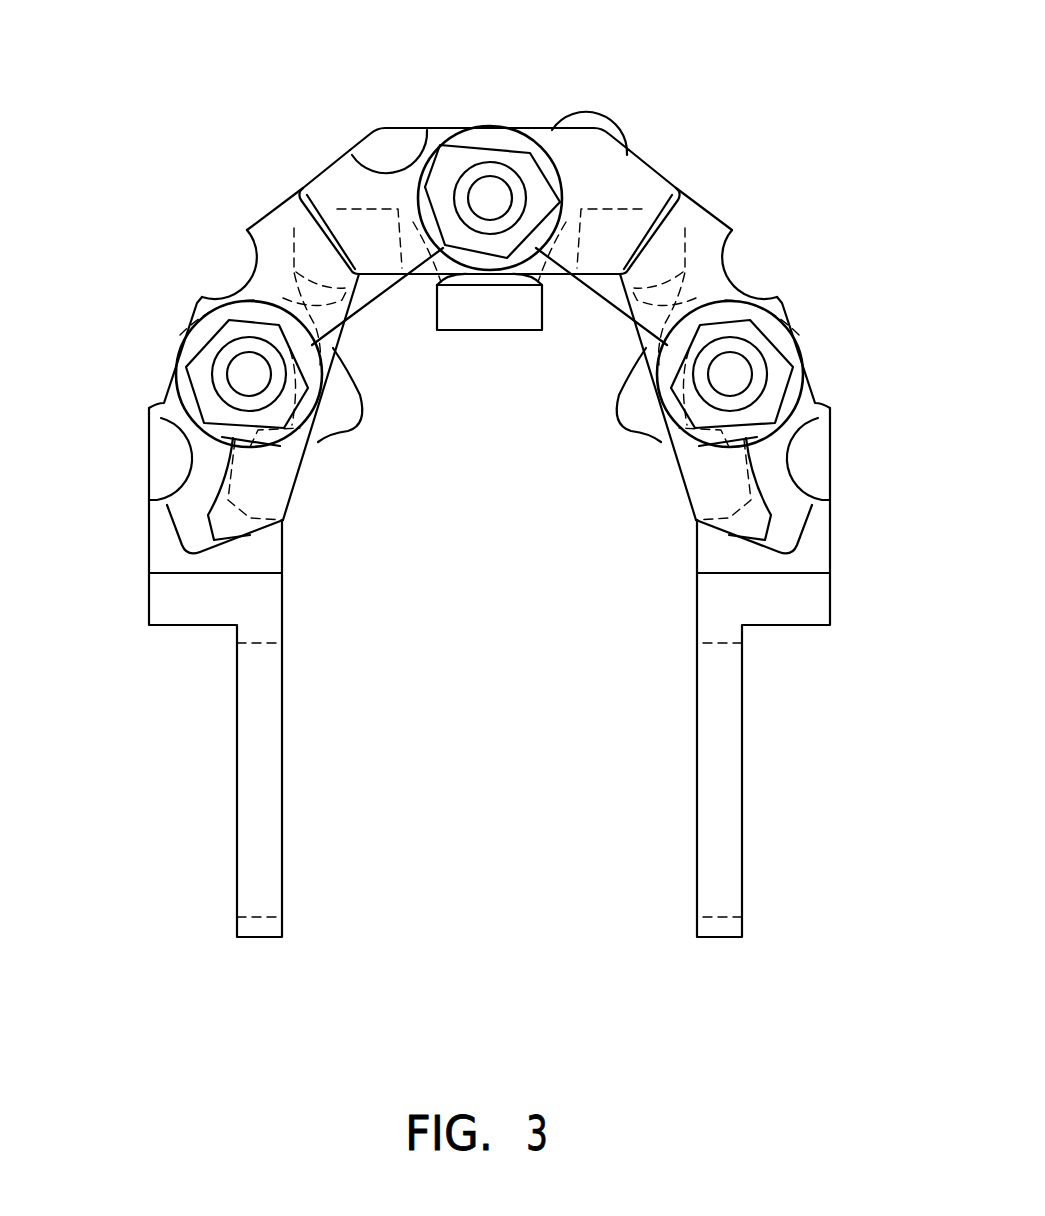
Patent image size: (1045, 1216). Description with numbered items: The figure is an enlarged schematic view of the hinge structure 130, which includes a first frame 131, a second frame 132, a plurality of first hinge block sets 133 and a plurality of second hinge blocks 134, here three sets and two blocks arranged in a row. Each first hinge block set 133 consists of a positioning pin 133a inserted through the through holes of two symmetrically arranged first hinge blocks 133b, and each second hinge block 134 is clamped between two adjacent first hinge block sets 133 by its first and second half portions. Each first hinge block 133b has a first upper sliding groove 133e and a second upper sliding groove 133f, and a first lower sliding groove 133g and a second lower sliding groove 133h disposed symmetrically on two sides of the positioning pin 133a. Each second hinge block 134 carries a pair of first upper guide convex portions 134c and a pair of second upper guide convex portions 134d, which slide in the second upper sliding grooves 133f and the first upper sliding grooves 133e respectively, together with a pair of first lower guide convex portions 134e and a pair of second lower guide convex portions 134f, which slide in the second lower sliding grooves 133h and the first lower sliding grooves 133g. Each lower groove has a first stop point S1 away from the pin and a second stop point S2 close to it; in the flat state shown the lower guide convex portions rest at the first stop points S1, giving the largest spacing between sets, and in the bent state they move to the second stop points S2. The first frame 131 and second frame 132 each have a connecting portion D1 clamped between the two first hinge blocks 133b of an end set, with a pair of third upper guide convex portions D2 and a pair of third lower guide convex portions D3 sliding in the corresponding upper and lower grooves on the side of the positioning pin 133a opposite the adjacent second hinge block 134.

The hinge structure 130 is at (489, 535).
The first frame 131 is at (195, 615).
The second frame 132 is at (783, 615).
The first hinge block set 133 is at (489, 286).
The positioning pin 133a is at (491, 192).
The first hinge block 133b is at (441, 148).
The first upper sliding groove 133e is at (420, 153).
The second upper sliding groove 133f is at (566, 156).
The first lower sliding groove 133g is at (360, 205).
The second lower sliding groove 133h is at (645, 190).
The second hinge block 134 is at (373, 288).
The first upper guide convex portion 134c is at (607, 152).
The second upper guide convex portion 134d is at (383, 150).
The first lower guide convex portion 134e is at (655, 185).
The second lower guide convex portion 134f is at (382, 200).
The first stop point S1 is at (300, 192).
The second stop point S2 is at (512, 245).
The connecting portion D1 is at (205, 565).
The third upper guide convex portion D2 is at (165, 450).
The third lower guide convex portion D3 is at (282, 520).